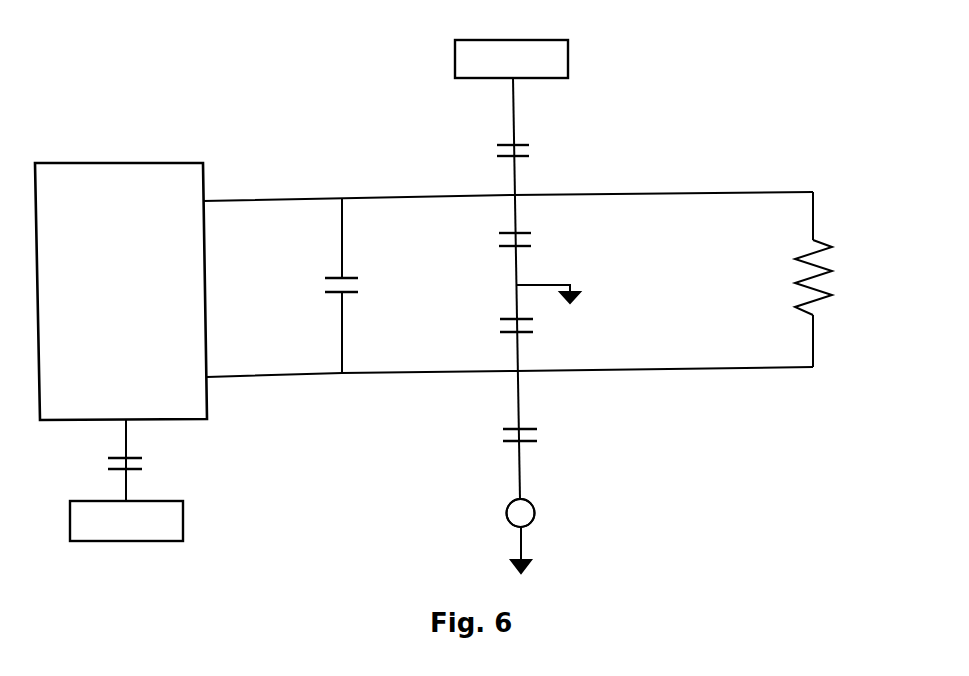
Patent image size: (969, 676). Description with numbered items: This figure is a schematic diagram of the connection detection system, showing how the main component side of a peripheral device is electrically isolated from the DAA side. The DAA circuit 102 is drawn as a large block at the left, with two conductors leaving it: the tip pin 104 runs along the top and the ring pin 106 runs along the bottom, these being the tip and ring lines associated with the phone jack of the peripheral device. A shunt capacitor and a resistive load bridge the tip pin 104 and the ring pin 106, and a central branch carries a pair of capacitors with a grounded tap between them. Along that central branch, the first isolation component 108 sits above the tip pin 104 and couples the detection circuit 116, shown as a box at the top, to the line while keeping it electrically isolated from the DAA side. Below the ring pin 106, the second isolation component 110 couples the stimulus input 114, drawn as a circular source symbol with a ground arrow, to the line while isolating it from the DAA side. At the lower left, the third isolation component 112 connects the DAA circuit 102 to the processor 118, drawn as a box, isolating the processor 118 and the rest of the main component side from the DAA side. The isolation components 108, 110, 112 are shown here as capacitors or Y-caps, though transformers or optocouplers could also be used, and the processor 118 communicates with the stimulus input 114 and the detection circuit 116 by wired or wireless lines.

The DAA circuit 102 is at (120, 163).
The tip pin 104 is at (633, 193).
The ring pin 106 is at (642, 369).
The first isolation component 108 is at (540, 146).
The second isolation component 110 is at (550, 430).
The third isolation component 112 is at (148, 460).
The stimulus input 114 is at (550, 508).
The detection circuit 116 is at (568, 58).
The processor 118 is at (183, 513).